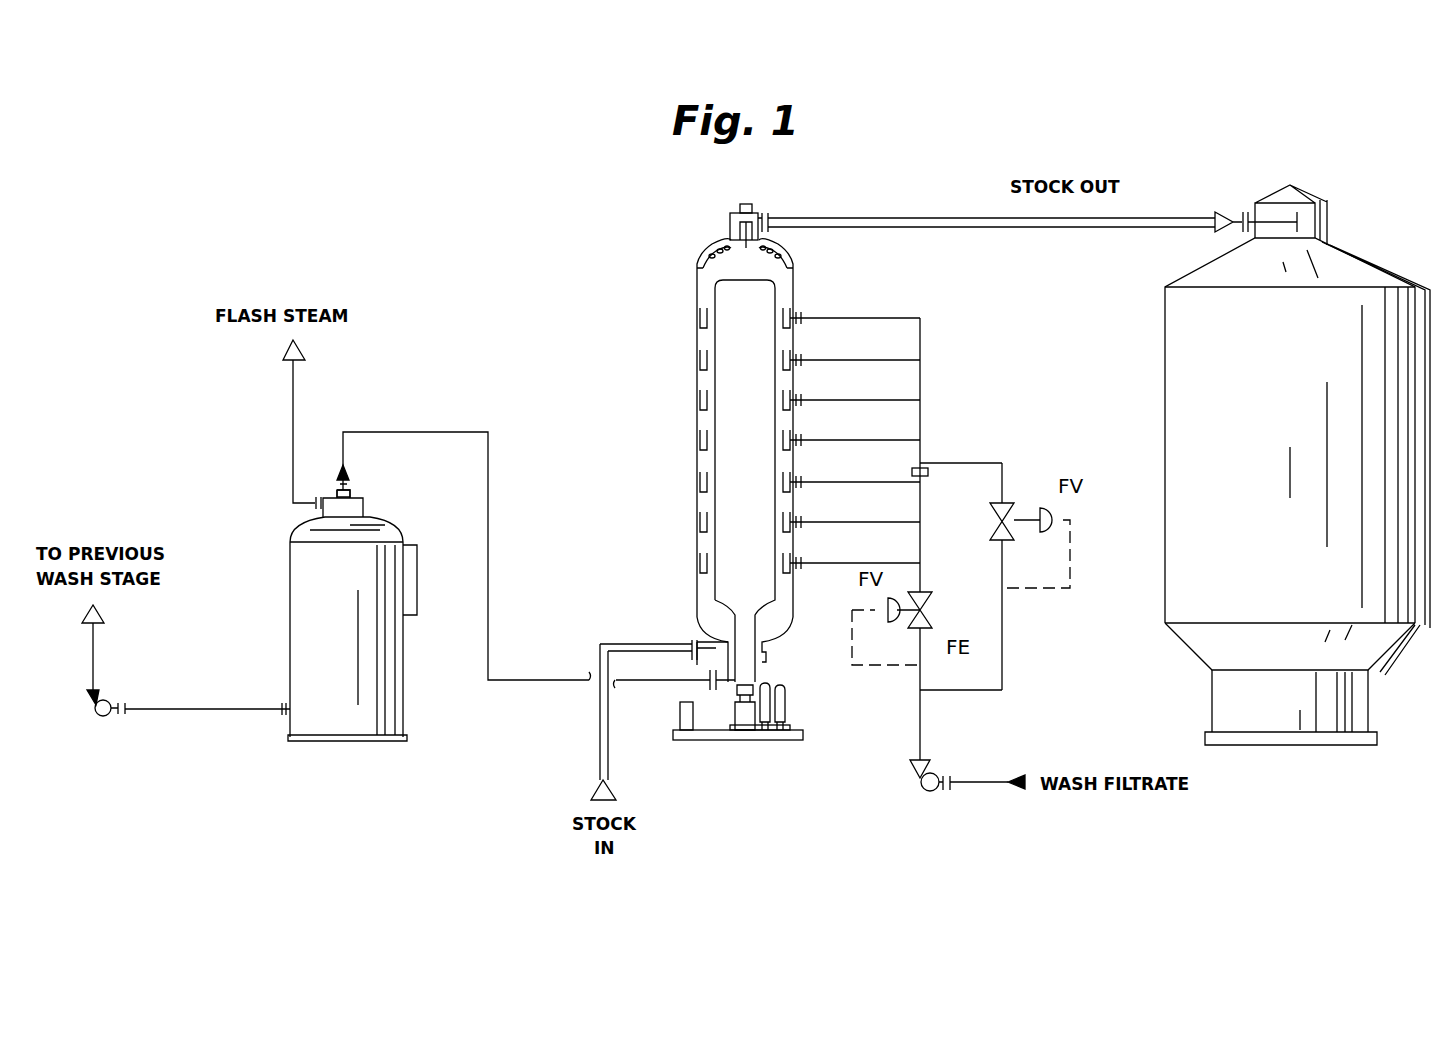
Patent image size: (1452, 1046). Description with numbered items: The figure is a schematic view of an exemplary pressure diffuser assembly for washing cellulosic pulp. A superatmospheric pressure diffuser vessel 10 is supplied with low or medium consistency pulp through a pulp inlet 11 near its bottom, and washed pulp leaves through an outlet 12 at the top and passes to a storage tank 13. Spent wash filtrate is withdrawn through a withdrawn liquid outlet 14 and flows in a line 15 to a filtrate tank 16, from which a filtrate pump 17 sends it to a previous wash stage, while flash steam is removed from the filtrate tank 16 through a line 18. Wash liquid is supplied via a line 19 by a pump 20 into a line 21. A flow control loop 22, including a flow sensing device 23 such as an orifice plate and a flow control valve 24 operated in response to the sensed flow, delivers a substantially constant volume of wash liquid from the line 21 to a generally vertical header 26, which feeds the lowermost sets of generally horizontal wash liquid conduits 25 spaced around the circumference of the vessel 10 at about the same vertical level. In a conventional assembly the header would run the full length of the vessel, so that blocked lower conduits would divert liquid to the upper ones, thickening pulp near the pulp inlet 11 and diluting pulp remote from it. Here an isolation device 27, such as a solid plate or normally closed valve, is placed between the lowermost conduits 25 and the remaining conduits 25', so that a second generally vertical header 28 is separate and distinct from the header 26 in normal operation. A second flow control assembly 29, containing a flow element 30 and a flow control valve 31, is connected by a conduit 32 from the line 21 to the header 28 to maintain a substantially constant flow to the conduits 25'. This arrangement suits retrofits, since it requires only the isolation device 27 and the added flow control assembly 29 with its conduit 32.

The pressure diffuser vessel 10 is at (668, 290).
The pulp inlet 11 is at (645, 640).
The outlet 12 is at (868, 218).
The storage tank 13 is at (1170, 462).
The withdrawn liquid outlet 14 is at (750, 670).
The line 15 is at (437, 432).
The filtrate tank 16 is at (340, 740).
The filtrate pump 17 is at (108, 700).
The line 18 is at (293, 400).
The line 19 is at (984, 786).
The pump 20 is at (917, 788).
The line 21 is at (922, 718).
The flow control loop 22 is at (836, 633).
The flow sensing device 23 is at (925, 666).
The flow control valve 24 is at (934, 615).
The wash liquid conduits 25 is at (855, 511).
The conduits 25' is at (855, 320).
The vertical header 26 is at (922, 540).
The isolation device 27 is at (898, 460).
The second vertical header 28 is at (922, 380).
The second flow control assembly 29 is at (1085, 588).
The flow element 30 is at (1005, 590).
The flow control valve 31 is at (1010, 498).
The conduit 32 is at (1003, 652).